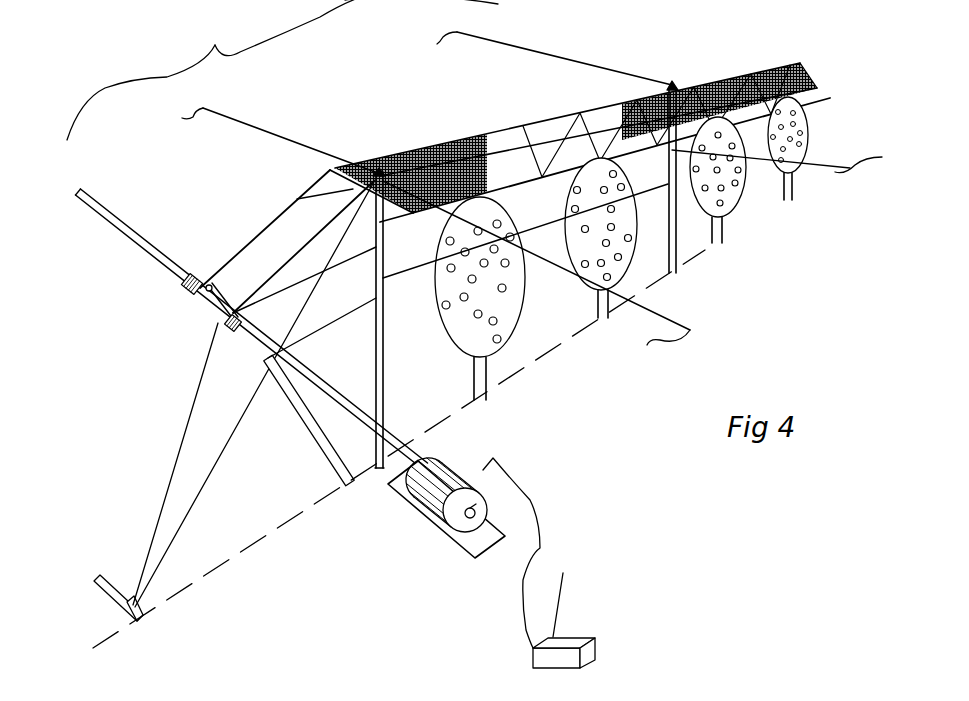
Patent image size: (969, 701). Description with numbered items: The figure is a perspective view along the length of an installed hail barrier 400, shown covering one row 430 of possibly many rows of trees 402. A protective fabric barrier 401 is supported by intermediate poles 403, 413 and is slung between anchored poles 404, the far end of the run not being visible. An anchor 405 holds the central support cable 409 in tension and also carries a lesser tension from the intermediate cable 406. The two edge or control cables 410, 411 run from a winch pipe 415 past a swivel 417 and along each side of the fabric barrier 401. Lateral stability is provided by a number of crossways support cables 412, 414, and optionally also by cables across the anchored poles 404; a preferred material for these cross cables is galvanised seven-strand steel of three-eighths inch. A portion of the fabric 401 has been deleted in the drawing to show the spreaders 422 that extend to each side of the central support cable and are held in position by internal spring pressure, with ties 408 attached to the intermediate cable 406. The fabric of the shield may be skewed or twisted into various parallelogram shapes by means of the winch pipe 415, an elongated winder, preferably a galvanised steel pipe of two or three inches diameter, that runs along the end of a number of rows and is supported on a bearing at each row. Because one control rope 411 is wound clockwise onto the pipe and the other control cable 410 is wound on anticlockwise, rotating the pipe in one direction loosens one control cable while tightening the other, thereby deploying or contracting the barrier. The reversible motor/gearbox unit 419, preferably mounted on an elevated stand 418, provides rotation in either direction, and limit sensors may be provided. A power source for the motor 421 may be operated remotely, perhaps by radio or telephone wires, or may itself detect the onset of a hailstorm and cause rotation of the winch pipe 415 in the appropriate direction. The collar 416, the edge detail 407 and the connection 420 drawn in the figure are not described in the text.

The installed hail barrier 400 is at (282, 70).
The protective fabric barrier 401 is at (413, 150).
The trees 402 is at (725, 245).
The intermediate pole 403 is at (432, 381).
The anchored pole 404 is at (342, 472).
The anchor 405 is at (125, 597).
The intermediate cable 406 is at (380, 348).
The cover edge 407 is at (322, 196).
The ties 408 is at (596, 300).
The central support cable 409 is at (280, 263).
The control cable 410 is at (290, 212).
The control rope 411 is at (326, 258).
The crossways support cable 412 is at (330, 155).
The intermediate pole 413 is at (740, 292).
The crossways support cable 414 is at (608, 62).
The winch pipe 415 is at (160, 262).
The collar 416 is at (180, 325).
The swivel 417 is at (222, 324).
The elevated stand 418 is at (500, 568).
The reversible motor/gearbox unit 419 is at (487, 438).
The power cable 420 is at (560, 507).
The power source for the motor 421 is at (633, 622).
The spreaders 422 is at (505, 150).
The row 430 is at (310, 550).